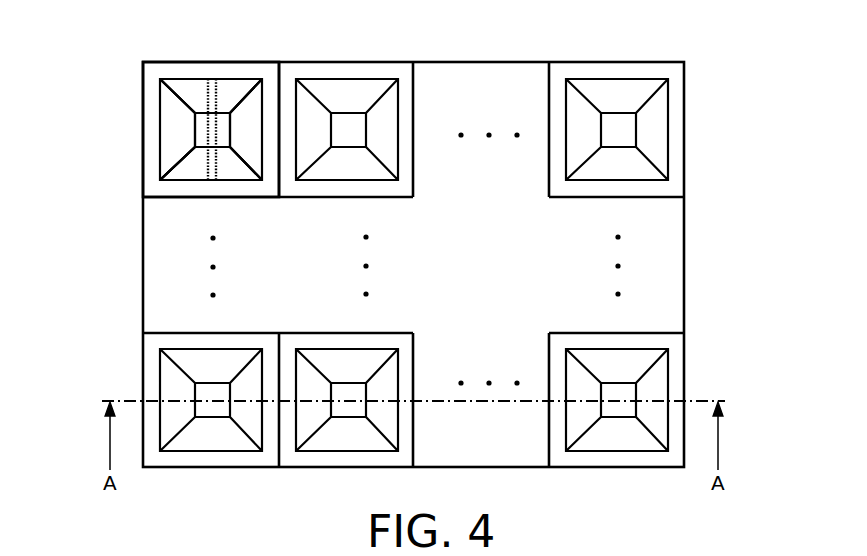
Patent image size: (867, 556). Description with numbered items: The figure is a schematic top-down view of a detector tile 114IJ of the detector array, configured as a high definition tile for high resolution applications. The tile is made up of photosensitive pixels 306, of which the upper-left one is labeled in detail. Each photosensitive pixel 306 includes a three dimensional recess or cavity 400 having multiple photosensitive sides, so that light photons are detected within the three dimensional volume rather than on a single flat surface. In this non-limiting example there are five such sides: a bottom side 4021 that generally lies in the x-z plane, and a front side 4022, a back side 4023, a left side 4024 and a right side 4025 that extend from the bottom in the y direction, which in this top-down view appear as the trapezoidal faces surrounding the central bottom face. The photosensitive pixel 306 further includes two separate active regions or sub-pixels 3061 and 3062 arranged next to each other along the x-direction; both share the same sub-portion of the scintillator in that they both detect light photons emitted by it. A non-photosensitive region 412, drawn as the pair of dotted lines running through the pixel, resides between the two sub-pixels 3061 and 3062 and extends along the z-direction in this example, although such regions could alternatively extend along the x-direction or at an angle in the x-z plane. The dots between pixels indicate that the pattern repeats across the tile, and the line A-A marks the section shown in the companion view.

The detector tile 114IJ is at (684, 98).
The photosensitive pixel 306 is at (143, 120).
The first sub-pixel 3061 is at (168, 97).
The second sub-pixel 3062 is at (253, 107).
The three dimensional recess or cavity 400 is at (187, 96).
The bottom side 4021 is at (200, 128).
The front side 4022 is at (227, 165).
The back side 4023 is at (230, 97).
The left side 4024 is at (168, 154).
The right side 4025 is at (252, 153).
The non-photosensitive region 412 is at (205, 171).